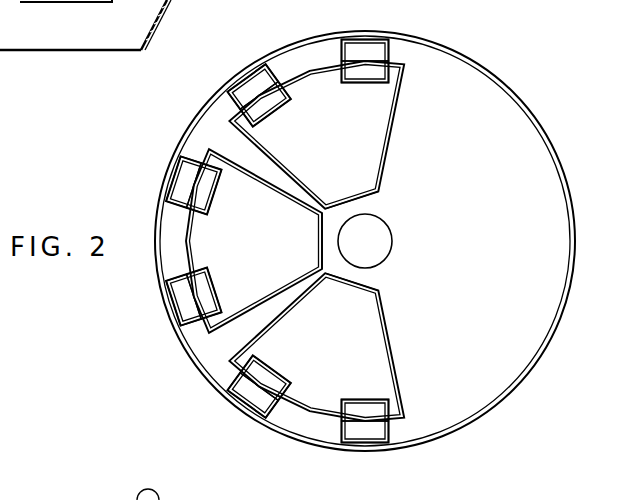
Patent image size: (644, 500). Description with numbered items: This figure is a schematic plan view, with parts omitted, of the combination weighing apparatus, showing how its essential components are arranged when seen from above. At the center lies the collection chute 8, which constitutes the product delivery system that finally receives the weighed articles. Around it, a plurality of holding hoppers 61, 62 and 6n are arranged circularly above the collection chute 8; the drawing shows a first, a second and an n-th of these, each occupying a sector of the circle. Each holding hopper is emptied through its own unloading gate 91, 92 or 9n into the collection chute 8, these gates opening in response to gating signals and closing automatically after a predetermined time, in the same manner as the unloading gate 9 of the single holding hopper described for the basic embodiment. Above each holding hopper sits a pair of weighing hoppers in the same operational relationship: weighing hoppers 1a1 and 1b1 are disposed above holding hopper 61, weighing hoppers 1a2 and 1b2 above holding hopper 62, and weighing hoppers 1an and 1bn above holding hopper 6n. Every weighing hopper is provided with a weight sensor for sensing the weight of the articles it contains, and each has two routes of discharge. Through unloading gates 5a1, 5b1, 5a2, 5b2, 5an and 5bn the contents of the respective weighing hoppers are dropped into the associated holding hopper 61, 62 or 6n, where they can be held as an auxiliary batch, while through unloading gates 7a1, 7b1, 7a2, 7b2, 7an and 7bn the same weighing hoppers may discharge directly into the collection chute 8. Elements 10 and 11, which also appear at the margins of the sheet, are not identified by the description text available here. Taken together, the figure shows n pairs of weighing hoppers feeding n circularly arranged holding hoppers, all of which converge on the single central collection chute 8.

The collection chute 8 is at (457, 49).
The holding hopper 61 is at (283, 186).
The holding hopper 62 is at (389, 327).
The holding hopper 6n is at (393, 119).
The unloading gate 91 is at (318, 238).
The unloading gate 92 is at (368, 278).
The unloading gate 9n is at (364, 198).
The weighing hopper 1an is at (252, 76).
The unloading gate 7an is at (264, 78).
The unloading gate 5an is at (273, 102).
The weighing hopper 1bn is at (365, 39).
The unloading gate 7bn is at (371, 50).
The unloading gate 5bn is at (365, 70).
The weighing hopper 1b1 is at (173, 184).
The unloading gate 7b1 is at (187, 159).
The unloading gate 5b1 is at (210, 189).
The weighing hopper 1a1 is at (173, 287).
The unloading gate 7a1 is at (190, 306).
The unloading gate 5a1 is at (210, 294).
The weighing hopper 1b2 is at (235, 402).
The unloading gate 7b2 is at (258, 400).
The unloading gate 5b2 is at (272, 374).
The weighing hopper 1a2 is at (353, 445).
The unloading gate 7a2 is at (370, 434).
The unloading gate 5a2 is at (362, 410).
The unloading gate 9 is at (96, 5).
The support 10 is at (10, 488).
The shaft 11 is at (125, 499).